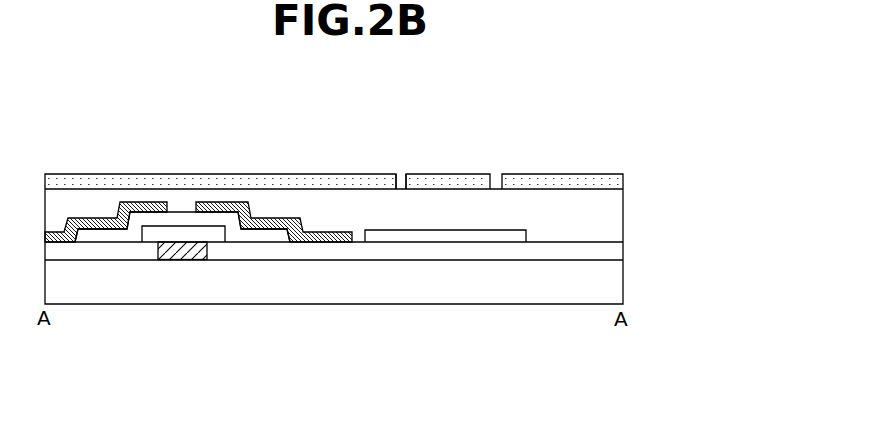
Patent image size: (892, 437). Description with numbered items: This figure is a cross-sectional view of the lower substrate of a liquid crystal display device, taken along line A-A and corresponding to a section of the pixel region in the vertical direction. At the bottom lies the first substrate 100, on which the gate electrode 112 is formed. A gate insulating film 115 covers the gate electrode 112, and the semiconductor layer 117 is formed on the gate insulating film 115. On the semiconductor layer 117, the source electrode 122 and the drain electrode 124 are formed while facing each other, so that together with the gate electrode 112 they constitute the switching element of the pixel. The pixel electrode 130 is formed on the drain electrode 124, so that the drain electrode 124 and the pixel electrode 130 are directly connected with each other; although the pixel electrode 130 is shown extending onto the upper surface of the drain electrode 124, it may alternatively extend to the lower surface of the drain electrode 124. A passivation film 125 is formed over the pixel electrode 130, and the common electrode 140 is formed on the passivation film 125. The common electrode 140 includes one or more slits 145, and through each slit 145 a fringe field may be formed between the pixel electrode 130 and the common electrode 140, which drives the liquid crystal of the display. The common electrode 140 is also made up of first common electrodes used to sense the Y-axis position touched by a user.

The first substrate 100 is at (618, 287).
The gate electrode 112 is at (183, 251).
The gate insulating film 115 is at (618, 250).
The semiconductor layer 117 is at (122, 233).
The source electrode 122 is at (73, 243).
The drain electrode 124 is at (306, 245).
The passivation film 125 is at (618, 213).
The pixel electrode 130 is at (413, 237).
The common electrode 140 is at (617, 183).
The slit 145 is at (402, 160).